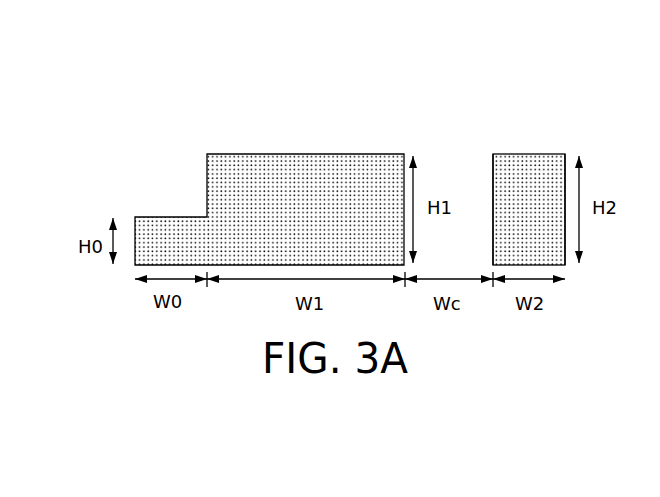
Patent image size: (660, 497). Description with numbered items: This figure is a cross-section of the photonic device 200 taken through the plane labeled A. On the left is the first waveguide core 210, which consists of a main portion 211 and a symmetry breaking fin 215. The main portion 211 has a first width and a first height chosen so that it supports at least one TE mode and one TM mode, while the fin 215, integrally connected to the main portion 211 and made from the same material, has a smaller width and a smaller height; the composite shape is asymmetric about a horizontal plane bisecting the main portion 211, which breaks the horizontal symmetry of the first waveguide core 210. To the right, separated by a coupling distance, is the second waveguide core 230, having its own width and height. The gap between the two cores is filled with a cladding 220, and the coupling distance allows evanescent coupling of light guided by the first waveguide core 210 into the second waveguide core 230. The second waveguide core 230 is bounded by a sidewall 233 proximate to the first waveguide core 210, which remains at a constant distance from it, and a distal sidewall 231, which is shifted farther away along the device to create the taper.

The photonic device 200 is at (366, 48).
The first waveguide core 210 is at (336, 104).
The main portion 211 is at (281, 192).
The symmetry breaking fin 215 is at (160, 230).
The cladding 220 is at (446, 160).
The second waveguide core 230 is at (538, 165).
The distal sidewall 231 is at (567, 157).
The proximate sidewall 233 is at (493, 207).